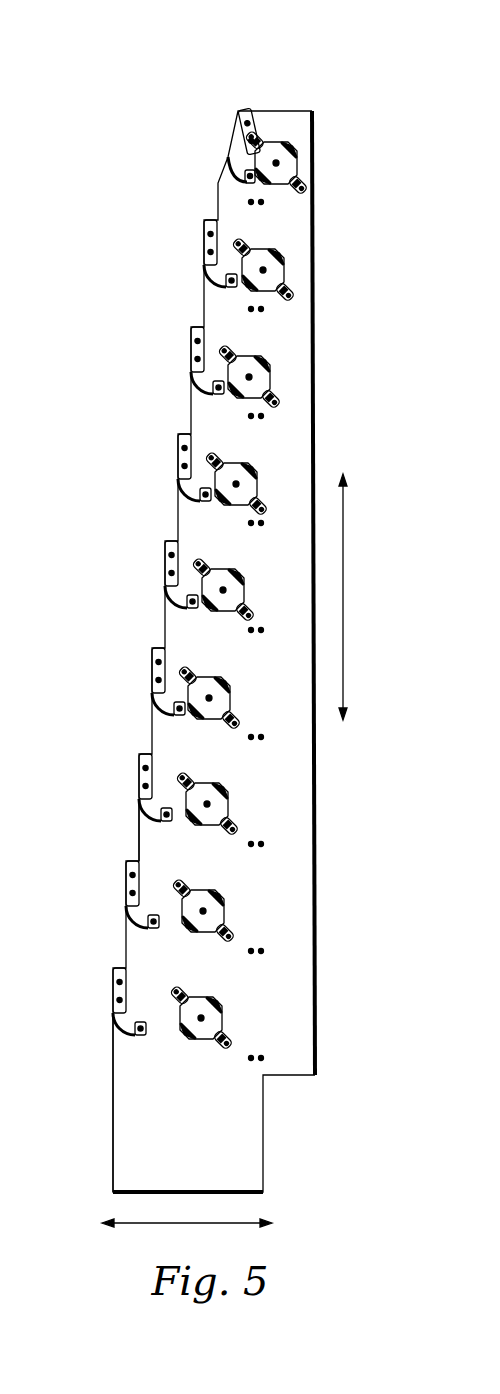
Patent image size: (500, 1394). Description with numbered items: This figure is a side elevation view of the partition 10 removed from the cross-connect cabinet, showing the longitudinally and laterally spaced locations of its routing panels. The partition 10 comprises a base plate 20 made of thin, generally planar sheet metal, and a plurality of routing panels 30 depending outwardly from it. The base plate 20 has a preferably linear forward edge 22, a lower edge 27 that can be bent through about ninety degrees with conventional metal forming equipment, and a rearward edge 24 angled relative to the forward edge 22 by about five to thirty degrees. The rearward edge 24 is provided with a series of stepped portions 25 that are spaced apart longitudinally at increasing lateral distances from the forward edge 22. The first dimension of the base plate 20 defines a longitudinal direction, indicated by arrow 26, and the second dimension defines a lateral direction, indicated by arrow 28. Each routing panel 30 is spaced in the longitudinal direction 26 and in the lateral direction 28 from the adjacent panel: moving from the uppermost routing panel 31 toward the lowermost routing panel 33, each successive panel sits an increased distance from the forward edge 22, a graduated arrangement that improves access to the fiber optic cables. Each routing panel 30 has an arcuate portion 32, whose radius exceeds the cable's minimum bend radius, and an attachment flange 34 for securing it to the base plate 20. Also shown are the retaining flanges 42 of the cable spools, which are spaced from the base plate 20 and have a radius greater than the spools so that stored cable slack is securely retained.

The partition 10 is at (137, 85).
The base plate 20 is at (300, 985).
The forward edge 22 is at (315, 255).
The rearward edge 24 is at (113, 1112).
The stepped portions 25 is at (163, 650).
The longitudinal direction 26 is at (345, 592).
The lower edge 27 is at (219, 1192).
The lateral direction 28 is at (233, 1223).
The routing panel 30 is at (192, 345).
The uppermost routing panel 31 is at (233, 135).
The arcuate portion 32 is at (192, 400).
The lowermost routing panel 33 is at (113, 993).
The attachment flange 34 is at (140, 870).
The retaining flange 42 is at (212, 713).